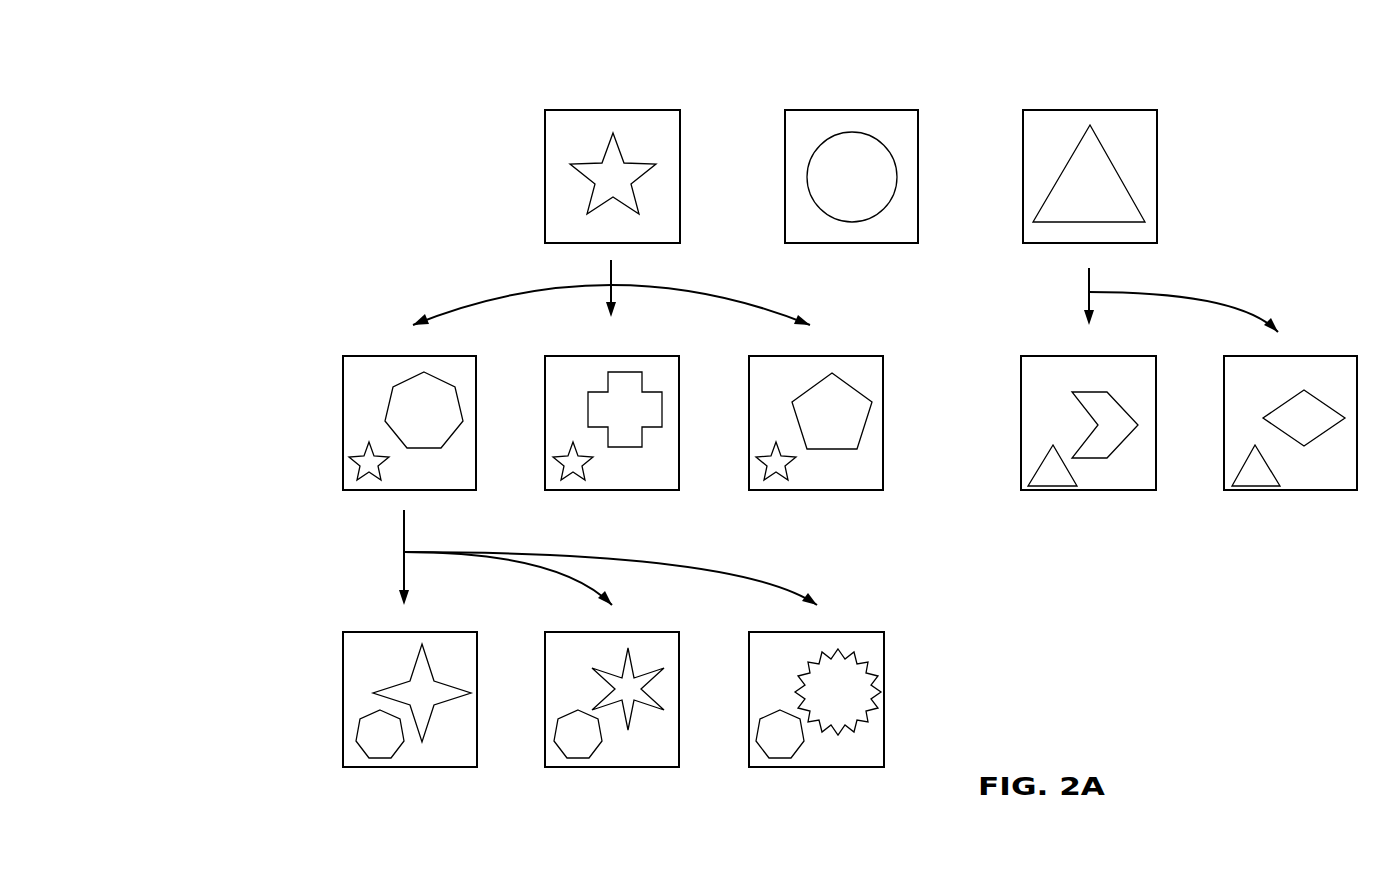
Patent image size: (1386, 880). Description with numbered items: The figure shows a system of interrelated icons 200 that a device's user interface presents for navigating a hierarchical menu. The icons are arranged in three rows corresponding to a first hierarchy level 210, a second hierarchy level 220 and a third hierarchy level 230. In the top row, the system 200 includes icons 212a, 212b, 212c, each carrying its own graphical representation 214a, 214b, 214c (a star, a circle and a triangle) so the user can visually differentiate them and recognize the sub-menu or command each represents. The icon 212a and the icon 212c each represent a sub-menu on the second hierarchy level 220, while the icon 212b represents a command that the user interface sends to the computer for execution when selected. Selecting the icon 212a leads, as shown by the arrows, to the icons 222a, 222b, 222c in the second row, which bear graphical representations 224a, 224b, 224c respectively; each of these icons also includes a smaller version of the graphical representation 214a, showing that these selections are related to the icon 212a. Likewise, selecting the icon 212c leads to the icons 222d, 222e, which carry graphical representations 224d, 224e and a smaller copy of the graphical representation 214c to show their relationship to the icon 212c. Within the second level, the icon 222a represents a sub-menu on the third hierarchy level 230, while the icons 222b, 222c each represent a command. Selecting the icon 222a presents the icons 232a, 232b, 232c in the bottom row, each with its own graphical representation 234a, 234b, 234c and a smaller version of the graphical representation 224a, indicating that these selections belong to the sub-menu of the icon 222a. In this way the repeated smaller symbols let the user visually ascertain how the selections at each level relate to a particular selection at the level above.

The system of interrelated icons 200 is at (1238, 93).
The first hierarchy level 210 is at (400, 178).
The second hierarchy level 220 is at (224, 410).
The third hierarchy level 230 is at (224, 687).
The icon 212a is at (603, 141).
The icon 212b is at (843, 141).
The icon 212c is at (1083, 141).
The graphical representation 214a is at (597, 173).
The graphical representation 214b is at (825, 180).
The graphical representation 214c is at (1075, 180).
The icon 222a is at (398, 386).
The icon 222b is at (601, 386).
The icon 222c is at (807, 386).
The icon 222d is at (1080, 386).
The icon 222e is at (1288, 386).
The graphical representation 224a is at (407, 418).
The graphical representation 224b is at (603, 412).
The graphical representation 224c is at (813, 410).
The graphical representation 224d is at (1102, 407).
The graphical representation 224e is at (1287, 412).
The icon 232a is at (398, 661).
The icon 232b is at (603, 661).
The icon 232c is at (810, 661).
The graphical representation 234a is at (407, 697).
The graphical representation 234b is at (628, 685).
The graphical representation 234c is at (813, 687).